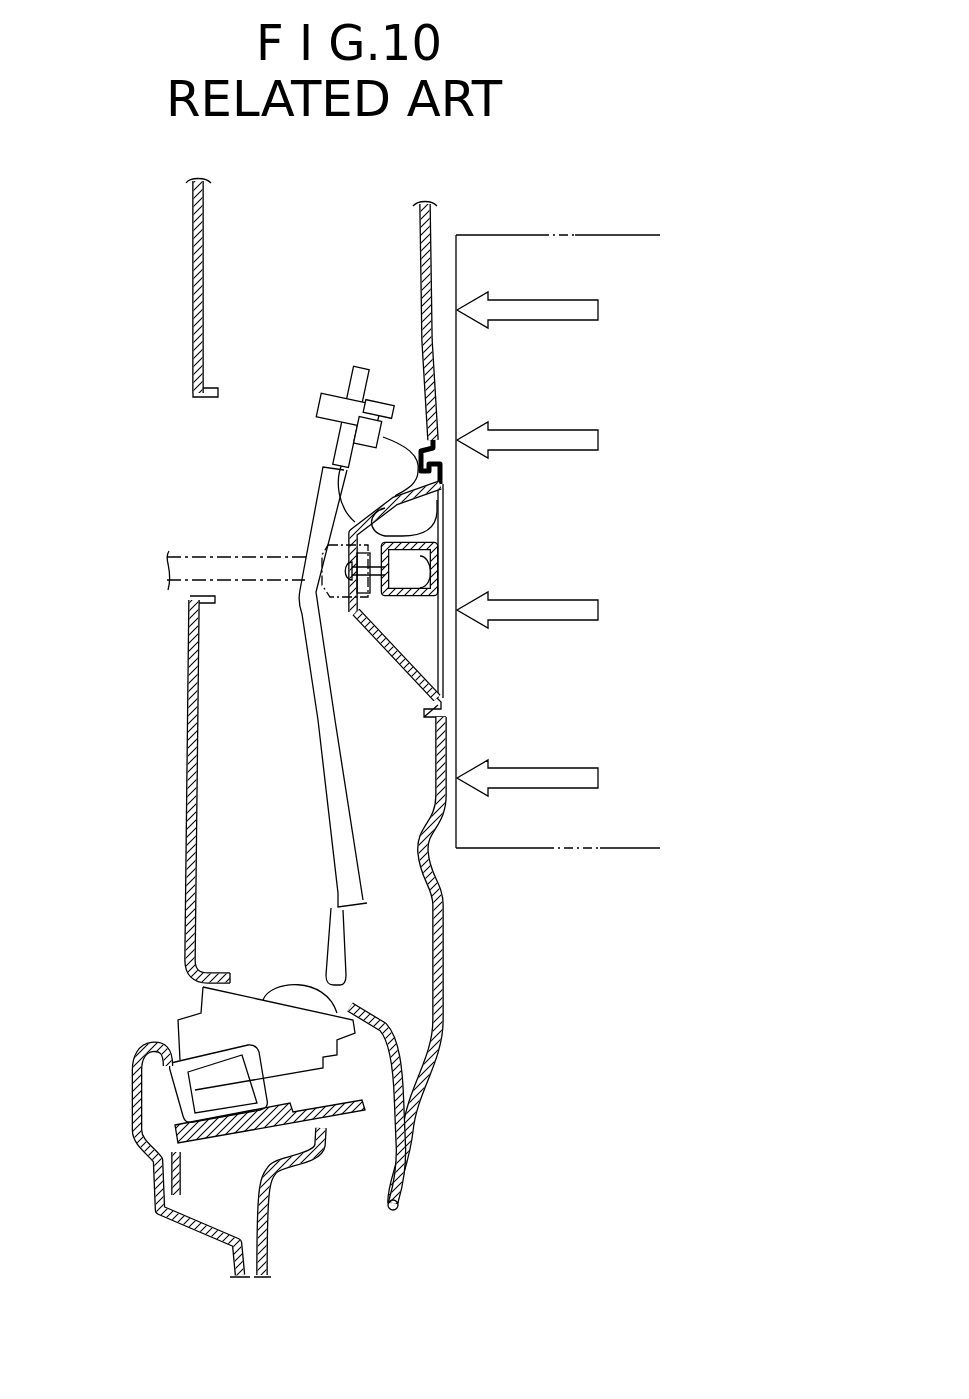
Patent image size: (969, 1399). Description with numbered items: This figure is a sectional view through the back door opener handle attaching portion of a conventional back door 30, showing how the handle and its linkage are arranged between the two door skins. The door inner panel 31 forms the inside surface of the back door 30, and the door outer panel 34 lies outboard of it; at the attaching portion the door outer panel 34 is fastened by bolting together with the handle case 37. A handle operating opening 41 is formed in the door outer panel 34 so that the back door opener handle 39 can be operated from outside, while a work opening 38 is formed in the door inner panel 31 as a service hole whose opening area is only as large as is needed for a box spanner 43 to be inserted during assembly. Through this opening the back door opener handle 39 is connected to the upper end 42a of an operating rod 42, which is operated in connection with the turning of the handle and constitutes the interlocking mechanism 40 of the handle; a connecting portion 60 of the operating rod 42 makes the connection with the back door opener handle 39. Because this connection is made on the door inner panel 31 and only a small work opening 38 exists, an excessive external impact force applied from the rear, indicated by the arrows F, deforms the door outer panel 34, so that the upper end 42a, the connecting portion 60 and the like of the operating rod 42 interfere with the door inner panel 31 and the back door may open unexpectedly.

The back door 30 is at (436, 236).
The door inner panel 31 is at (190, 808).
The door outer panel 34 is at (444, 913).
The handle case 37 is at (413, 668).
The work opening 38 is at (202, 398).
The back door opener handle 39 is at (442, 516).
The interlocking mechanism 40 is at (296, 708).
The handle operating opening 41 is at (411, 686).
The operating rod 42 is at (306, 628).
The upper end 42a is at (351, 384).
The box spanner 43 is at (206, 556).
The connecting portion 60 is at (366, 400).
The arrows (external impact force) F is at (579, 431).